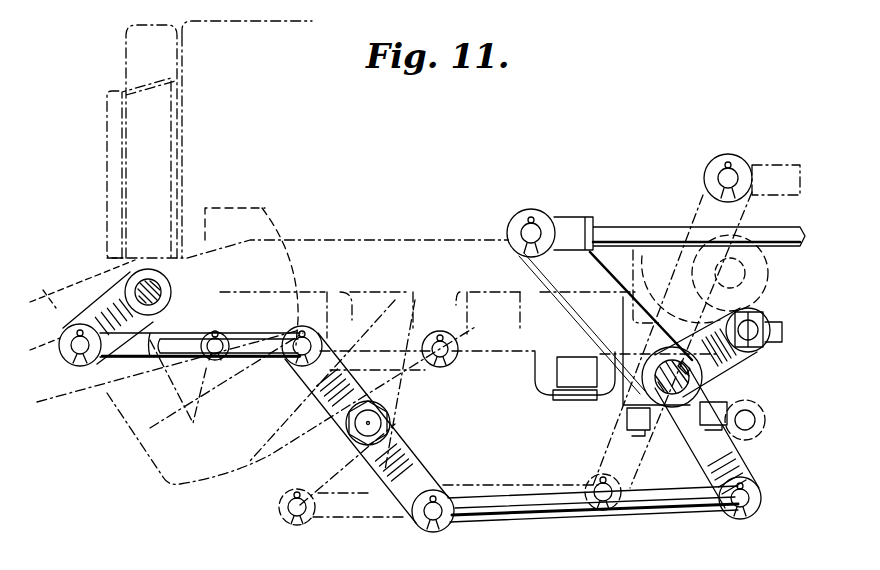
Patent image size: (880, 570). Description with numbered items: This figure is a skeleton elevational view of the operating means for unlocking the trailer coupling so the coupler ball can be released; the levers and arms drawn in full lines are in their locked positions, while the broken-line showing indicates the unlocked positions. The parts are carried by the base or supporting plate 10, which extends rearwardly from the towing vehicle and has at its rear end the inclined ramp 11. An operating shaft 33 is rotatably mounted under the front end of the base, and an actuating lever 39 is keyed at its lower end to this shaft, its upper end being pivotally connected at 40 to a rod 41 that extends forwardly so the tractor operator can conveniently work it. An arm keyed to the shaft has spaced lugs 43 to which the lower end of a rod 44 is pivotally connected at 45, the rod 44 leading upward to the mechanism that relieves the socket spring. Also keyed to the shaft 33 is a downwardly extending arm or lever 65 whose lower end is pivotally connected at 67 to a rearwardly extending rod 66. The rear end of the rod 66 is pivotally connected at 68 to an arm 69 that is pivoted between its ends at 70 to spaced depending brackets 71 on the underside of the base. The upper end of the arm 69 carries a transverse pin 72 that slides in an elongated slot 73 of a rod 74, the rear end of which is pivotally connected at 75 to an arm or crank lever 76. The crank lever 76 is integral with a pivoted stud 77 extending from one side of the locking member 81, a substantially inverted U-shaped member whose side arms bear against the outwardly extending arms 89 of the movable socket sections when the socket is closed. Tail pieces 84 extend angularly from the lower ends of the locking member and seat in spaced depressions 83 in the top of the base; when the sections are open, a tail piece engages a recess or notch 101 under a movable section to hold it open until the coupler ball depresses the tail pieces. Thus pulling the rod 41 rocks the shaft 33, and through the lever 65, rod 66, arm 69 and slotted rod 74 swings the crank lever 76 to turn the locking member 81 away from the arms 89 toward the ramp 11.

The base or supporting plate 10 is at (390, 252).
The inclined ramp 11 is at (81, 305).
The operating shaft 33 is at (648, 385).
The actuating lever 39 is at (578, 316).
The pivotal connection 40 is at (548, 217).
The rod 41 is at (625, 224).
The spaced lugs 43 is at (752, 380).
The rod 44 is at (758, 278).
The pivotal connection 45 is at (756, 322).
The arm or lever 65 is at (612, 462).
The rearwardly extending rod 66 is at (565, 512).
The pivotal connection 67 is at (612, 500).
The pivotal connection 68 is at (292, 497).
The arm 69 is at (407, 452).
The pivot 70 is at (390, 422).
The spaced depending brackets 71 is at (403, 385).
The transverse pin 72 is at (322, 335).
The elongated slot 73 is at (252, 333).
The rod 74 is at (117, 366).
The pivotal connection 75 is at (70, 360).
The arm or crank lever 76 is at (92, 306).
The pivoted stud 77 is at (171, 290).
The locking member 81 is at (140, 58).
The spaced depressions 83 is at (222, 405).
The tail pieces 84 is at (150, 395).
The outwardly extending portions or arms 89 is at (114, 150).
The recess or notch 101 is at (255, 212).